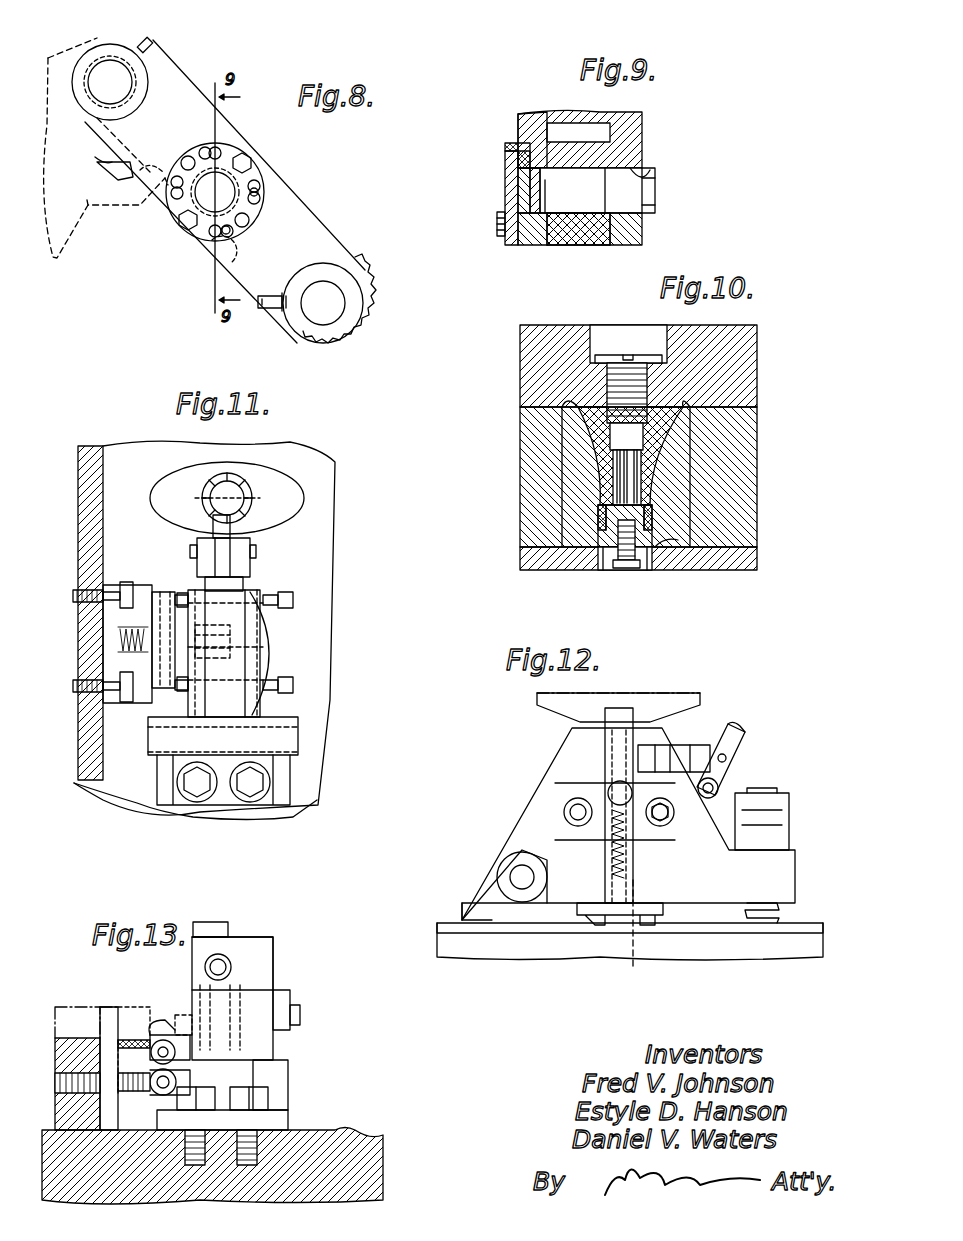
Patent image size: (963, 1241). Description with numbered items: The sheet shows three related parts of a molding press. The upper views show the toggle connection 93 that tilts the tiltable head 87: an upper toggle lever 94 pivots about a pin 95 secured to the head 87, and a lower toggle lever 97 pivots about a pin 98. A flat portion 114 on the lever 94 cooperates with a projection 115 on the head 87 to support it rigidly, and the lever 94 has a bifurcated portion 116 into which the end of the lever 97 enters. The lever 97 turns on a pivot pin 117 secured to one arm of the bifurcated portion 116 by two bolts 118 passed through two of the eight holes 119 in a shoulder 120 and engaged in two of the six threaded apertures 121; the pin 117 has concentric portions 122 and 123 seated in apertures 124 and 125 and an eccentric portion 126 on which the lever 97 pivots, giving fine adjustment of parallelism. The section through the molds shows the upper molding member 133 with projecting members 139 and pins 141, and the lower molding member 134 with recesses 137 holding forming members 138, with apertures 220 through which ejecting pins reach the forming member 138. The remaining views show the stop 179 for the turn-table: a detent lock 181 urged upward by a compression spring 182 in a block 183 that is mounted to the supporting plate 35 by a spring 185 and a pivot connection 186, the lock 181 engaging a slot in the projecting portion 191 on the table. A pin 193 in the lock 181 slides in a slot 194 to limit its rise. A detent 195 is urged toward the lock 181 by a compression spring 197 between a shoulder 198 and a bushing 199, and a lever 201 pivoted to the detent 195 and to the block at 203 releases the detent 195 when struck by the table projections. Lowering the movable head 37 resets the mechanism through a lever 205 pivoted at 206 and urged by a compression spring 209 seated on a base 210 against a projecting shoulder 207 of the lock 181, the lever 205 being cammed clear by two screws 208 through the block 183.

In FIG. 8, the tiltable head 87 is at (68, 53).
In FIG. 8, the upper toggle lever 94 is at (162, 86).
In FIG. 8, the pin 95 is at (150, 48).
In FIG. 8, the flat portion 114 is at (96, 160).
In FIG. 8, the projection 115 is at (87, 205).
In FIG. 8, the toggle connection 93 is at (272, 166).
In FIG. 8, the pivot pin 117 is at (228, 192).
In FIG. 9, the pivot pin 117 is at (580, 200).
In FIG. 8, the bolts 118 is at (184, 220).
In FIG. 9, the bolts 118 is at (497, 218).
In FIG. 8, the holes 119 is at (230, 232).
In FIG. 9, the holes 119 is at (506, 230).
In FIG. 8, the threaded apertures 121 is at (214, 258).
In FIG. 9, the threaded apertures 121 is at (551, 112).
In FIG. 8, the lower toggle lever 97 is at (327, 258).
In FIG. 9, the lower toggle lever 97 is at (595, 245).
In FIG. 8, the pin 98 is at (327, 287).
In FIG. 9, the bifurcated portion 116 is at (636, 112).
In FIG. 9, the shoulder 120 is at (509, 143).
In FIG. 9, the concentric portion 122 is at (533, 195).
In FIG. 9, the concentric portion 123 is at (643, 207).
In FIG. 9, the aperture 124 is at (528, 178).
In FIG. 9, the aperture 125 is at (648, 178).
In FIG. 9, the eccentric portion 126 is at (570, 235).
In FIG. 10, the upper molding member 133 is at (538, 344).
In FIG. 10, the lower molding member 134 is at (532, 460).
In FIG. 10, the recesses 137 is at (590, 490).
In FIG. 10, the forming members 138 is at (655, 563).
In FIG. 10, the projecting members 139 is at (655, 470).
In FIG. 10, the pins 141 is at (655, 520).
In FIG. 10, the apertures 220 is at (605, 565).
In FIG. 11, the supporting plate 35 is at (308, 796).
In FIG. 12, the supporting plate 35 is at (460, 968).
In FIG. 13, the supporting plate 35 is at (322, 1128).
In FIG. 11, the movable head 37 is at (80, 790).
In FIG. 13, the movable head 37 is at (58, 1035).
In FIG. 11, the stop 179 is at (330, 634).
In FIG. 12, the stop 179 is at (722, 712).
In FIG. 13, the stop 179 is at (290, 958).
In FIG. 11, the detent lock 181 is at (222, 663).
In FIG. 12, the detent lock 181 is at (588, 720).
In FIG. 13, the detent lock 181 is at (200, 920).
In FIG. 12, the compression spring 182 is at (637, 952).
In FIG. 11, the block 183 is at (245, 590).
In FIG. 12, the block 183 is at (530, 845).
In FIG. 13, the block 183 is at (240, 1055).
In FIG. 12, the spring 185 is at (777, 915).
In FIG. 11, the pivot connection 186 is at (287, 742).
In FIG. 12, the pivot connection 186 is at (480, 870).
In FIG. 13, the pivot connection 186 is at (285, 1080).
In FIG. 12, the projecting portion 191 is at (615, 695).
In FIG. 11, the pin 193 is at (293, 637).
In FIG. 12, the pin 193 is at (618, 792).
In FIG. 13, the pin 193 is at (280, 1005).
In FIG. 12, the slot 194 is at (610, 820).
In FIG. 12, the detent 195 is at (695, 742).
In FIG. 12, the compression spring 197 is at (740, 713).
In FIG. 12, the shoulder 198 is at (620, 780).
In FIG. 11, the bushing 199 is at (255, 575).
In FIG. 12, the bushing 199 is at (675, 815).
In FIG. 11, the lever 201 is at (232, 523).
In FIG. 12, the lever 201 is at (742, 733).
In FIG. 12, the pivot 203 is at (718, 788).
In FIG. 11, the lever 205 is at (150, 596).
In FIG. 13, the lever 205 is at (160, 1015).
In FIG. 13, the pivot 206 is at (168, 1082).
In FIG. 11, the projecting shoulder 207 is at (190, 620).
In FIG. 13, the projecting shoulder 207 is at (180, 1015).
In FIG. 11, the screws 208 is at (183, 688).
In FIG. 13, the screws 208 is at (175, 1000).
In FIG. 11, the compression spring 209 is at (126, 582).
In FIG. 13, the compression spring 209 is at (128, 1018).
In FIG. 11, the base 210 is at (110, 642).
In FIG. 13, the base 210 is at (108, 1050).